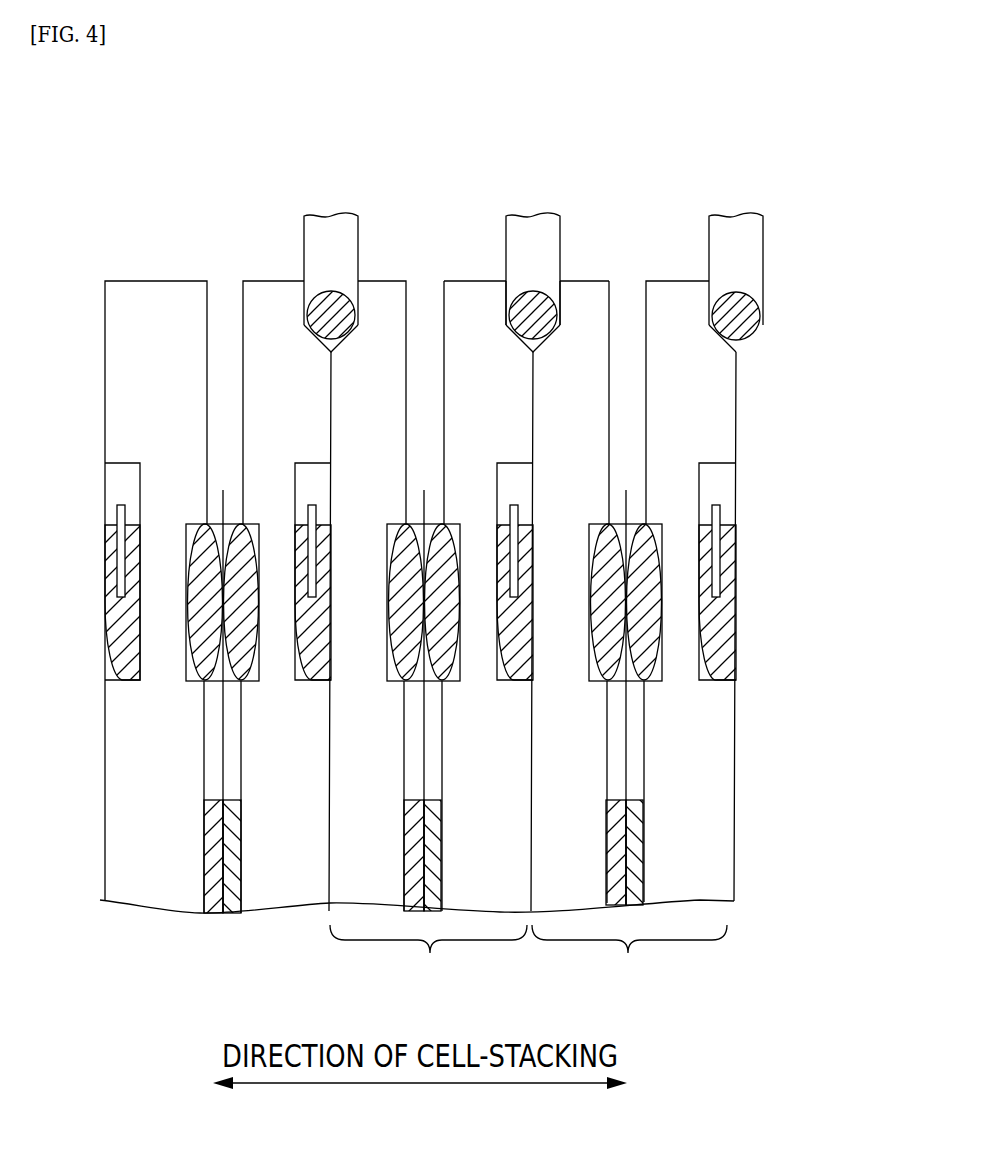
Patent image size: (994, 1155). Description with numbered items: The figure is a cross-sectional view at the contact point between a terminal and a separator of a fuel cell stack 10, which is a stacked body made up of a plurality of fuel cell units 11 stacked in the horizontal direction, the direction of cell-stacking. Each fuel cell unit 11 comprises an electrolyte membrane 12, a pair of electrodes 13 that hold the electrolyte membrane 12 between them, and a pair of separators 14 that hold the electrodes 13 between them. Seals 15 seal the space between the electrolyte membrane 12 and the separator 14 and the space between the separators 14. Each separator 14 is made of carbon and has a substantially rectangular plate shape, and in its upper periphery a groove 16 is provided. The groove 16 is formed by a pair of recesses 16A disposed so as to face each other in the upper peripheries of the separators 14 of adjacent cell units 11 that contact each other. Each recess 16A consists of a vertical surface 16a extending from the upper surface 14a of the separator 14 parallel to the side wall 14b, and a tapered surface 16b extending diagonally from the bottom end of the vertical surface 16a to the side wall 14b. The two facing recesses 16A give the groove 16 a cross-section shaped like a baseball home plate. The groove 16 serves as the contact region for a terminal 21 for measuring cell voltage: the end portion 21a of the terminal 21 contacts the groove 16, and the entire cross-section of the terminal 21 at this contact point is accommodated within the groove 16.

The fuel cell stack 10 is at (226, 244).
The fuel cell unit 11 is at (528, 959).
The electrolyte membrane 12 is at (424, 491).
The electrode 13 is at (404, 832).
The separator 14 is at (610, 307).
The upper surface of the separator 14a is at (467, 281).
The side wall of the separator 14b is at (533, 420).
The seal 15 is at (303, 660).
The groove 16 is at (498, 266).
The recess 16A is at (518, 297).
The vertical surface 16a is at (511, 302).
The tapered surface 16b is at (524, 343).
The terminal 21 is at (763, 250).
The end portion 21a is at (761, 311).